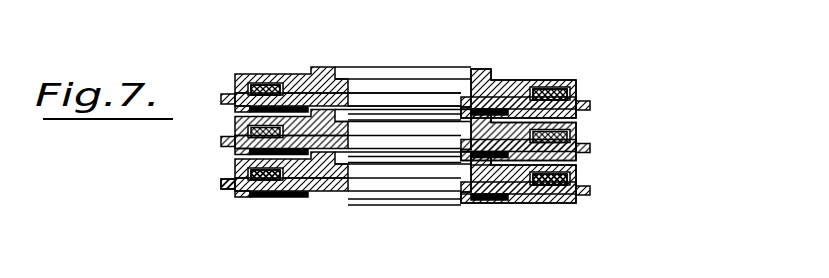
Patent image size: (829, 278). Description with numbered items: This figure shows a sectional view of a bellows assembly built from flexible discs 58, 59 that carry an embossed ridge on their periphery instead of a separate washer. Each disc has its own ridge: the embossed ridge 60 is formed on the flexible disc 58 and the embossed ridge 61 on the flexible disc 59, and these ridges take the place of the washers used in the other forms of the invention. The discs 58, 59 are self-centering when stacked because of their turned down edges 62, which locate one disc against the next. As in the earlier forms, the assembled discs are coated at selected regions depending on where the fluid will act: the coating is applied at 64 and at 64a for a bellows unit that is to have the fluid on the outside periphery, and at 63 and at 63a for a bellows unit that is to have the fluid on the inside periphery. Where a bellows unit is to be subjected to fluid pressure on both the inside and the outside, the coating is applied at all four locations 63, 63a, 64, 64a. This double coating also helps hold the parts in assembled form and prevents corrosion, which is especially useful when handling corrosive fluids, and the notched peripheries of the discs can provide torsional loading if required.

The flexible disc 58 is at (213, 177).
The flexible disc 59 is at (568, 173).
The embossed ridge 60 is at (248, 183).
The embossed ridge 61 is at (483, 160).
The turned down edges 62 is at (568, 86).
The coating location 63 is at (287, 77).
The coating location 63a is at (348, 100).
The coating location 64 is at (525, 92).
The coating location 64a is at (557, 128).